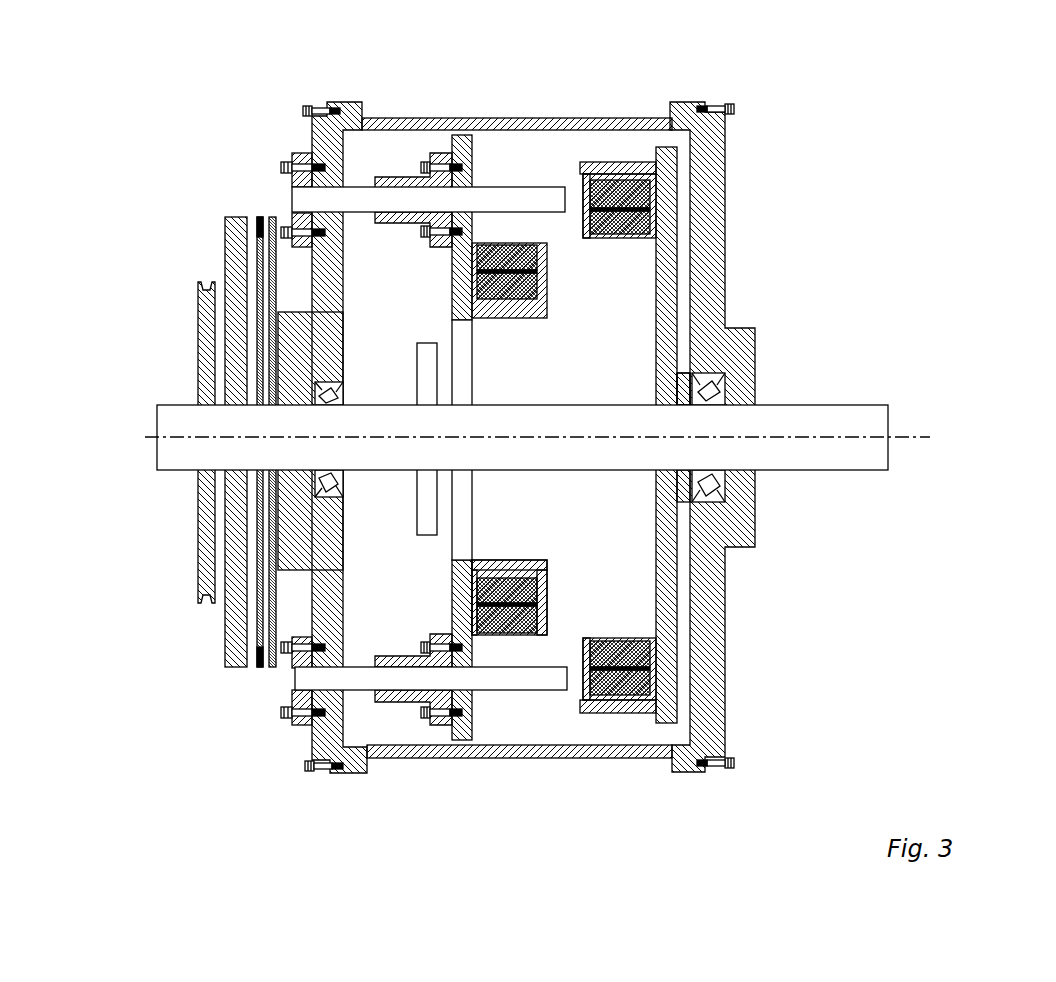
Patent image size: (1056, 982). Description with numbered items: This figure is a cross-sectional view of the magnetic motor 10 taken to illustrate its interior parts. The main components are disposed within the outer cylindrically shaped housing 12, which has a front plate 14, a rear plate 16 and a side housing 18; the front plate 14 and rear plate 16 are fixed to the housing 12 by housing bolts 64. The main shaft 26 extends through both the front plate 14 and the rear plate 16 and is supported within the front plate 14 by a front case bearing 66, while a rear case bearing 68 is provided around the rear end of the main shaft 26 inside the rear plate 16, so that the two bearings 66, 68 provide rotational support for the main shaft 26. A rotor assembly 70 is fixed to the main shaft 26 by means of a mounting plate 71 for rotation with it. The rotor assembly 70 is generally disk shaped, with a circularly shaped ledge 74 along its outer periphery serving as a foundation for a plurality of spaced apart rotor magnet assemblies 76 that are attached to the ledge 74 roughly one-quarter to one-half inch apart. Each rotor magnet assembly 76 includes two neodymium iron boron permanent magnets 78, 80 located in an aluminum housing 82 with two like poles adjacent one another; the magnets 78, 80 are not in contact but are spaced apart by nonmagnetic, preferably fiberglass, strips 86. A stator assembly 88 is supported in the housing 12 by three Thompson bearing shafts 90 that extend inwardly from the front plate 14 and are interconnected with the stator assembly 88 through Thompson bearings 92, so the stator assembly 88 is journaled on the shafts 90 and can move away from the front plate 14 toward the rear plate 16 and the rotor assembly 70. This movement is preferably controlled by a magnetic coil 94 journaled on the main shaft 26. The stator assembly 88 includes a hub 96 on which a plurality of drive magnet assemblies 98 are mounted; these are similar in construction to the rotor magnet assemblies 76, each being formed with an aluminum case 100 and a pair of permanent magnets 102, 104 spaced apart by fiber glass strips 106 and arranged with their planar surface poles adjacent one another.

The magnetic motor 10 is at (773, 134).
The housing 12 is at (726, 687).
The front plate 14 is at (315, 131).
The rear plate 16 is at (724, 615).
The side housing 18 is at (425, 117).
The main shaft 26 is at (827, 403).
The housing bolts 64 is at (308, 107).
The front case bearing 66 is at (323, 493).
The rear case bearing 68 is at (713, 388).
The rotor assembly 70 is at (655, 146).
The mounting plate 71 is at (672, 390).
The ledge 74 is at (590, 162).
The rotor magnet assemblies 76 is at (583, 222).
The permanent magnet 78 is at (622, 190).
The permanent magnet 80 is at (650, 225).
The aluminum housing 82 is at (583, 182).
The nonmagnetic strips 86 is at (607, 212).
The stator assembly 88 is at (473, 346).
The Thompson bearing shafts 90 is at (490, 186).
The Thompson bearings 92 is at (407, 223).
The magnetic coil 94 is at (417, 362).
The hub 96 is at (493, 560).
The drive magnet assemblies 98 is at (543, 287).
The aluminum case 100 is at (455, 578).
The permanent magnet 102 is at (487, 625).
The permanent magnet 104 is at (543, 587).
The fiber glass strips 106 is at (527, 618).